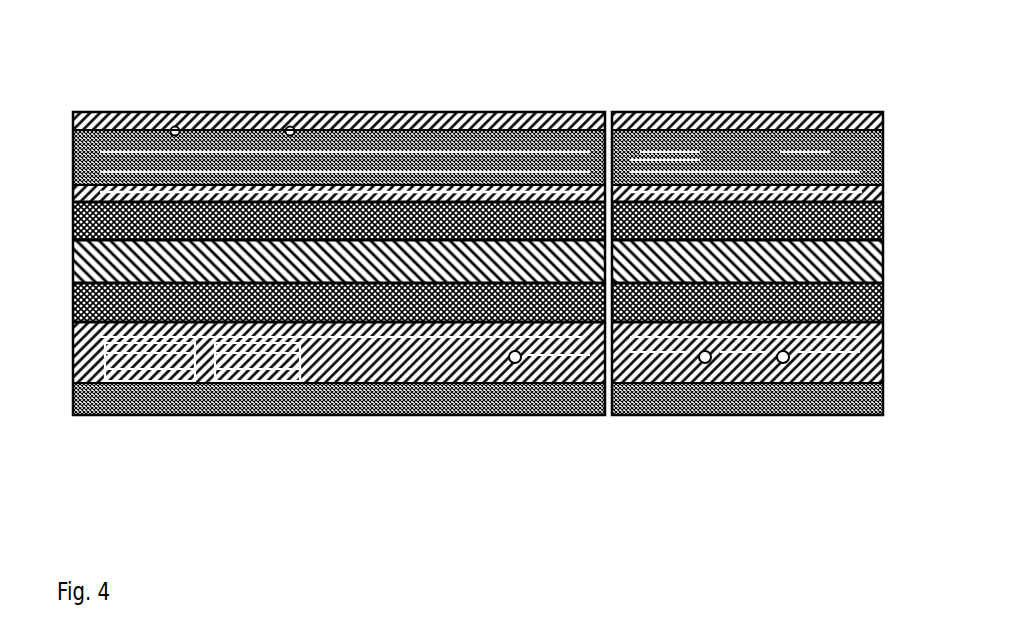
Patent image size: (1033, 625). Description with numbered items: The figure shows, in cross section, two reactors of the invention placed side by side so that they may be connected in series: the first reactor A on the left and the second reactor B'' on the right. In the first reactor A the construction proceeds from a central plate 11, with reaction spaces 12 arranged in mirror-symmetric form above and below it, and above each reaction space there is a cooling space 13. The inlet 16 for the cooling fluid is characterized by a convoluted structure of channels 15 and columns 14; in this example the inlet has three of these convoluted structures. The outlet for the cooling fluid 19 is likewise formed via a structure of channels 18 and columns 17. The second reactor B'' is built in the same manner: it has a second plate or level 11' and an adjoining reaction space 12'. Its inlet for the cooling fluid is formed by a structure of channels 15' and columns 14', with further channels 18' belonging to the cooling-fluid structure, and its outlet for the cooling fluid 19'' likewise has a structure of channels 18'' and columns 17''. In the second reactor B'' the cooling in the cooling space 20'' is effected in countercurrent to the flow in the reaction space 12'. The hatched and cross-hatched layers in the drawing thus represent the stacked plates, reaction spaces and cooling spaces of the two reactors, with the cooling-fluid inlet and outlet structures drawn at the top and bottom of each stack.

The central plate 11 is at (317, 267).
The reaction spaces 12 is at (317, 308).
The cooling space 13 is at (380, 108).
The columns 14 is at (339, 92).
The channels 15 is at (145, 85).
The inlet for the cooling fluid 16 is at (283, 108).
The columns 17 is at (339, 128).
The channels 18 is at (345, 113).
The outlet for the cooling fluid 19 is at (345, 100).
The second plate or level 11' is at (774, 260).
The reaction space 12' is at (774, 299).
The columns 14' is at (747, 96).
The channels 15' is at (802, 107).
The channels 18' is at (699, 107).
The columns 17'' is at (739, 131).
The channels 18'' is at (744, 116).
The outlet for the cooling fluid 19'' is at (665, 110).
The cooling space 20'' is at (744, 211).
The first reactor A is at (378, 420).
The second reactor B'' is at (766, 271).